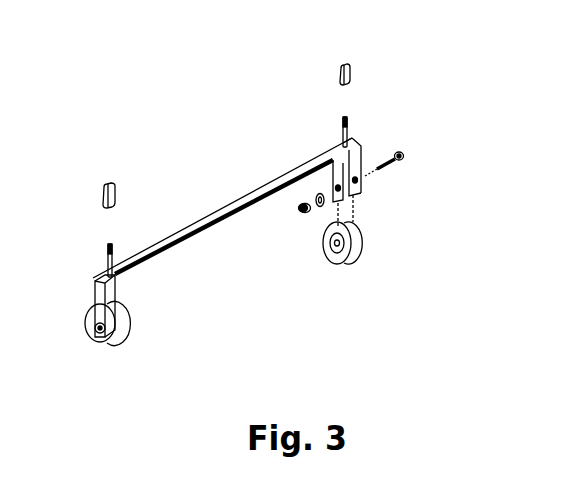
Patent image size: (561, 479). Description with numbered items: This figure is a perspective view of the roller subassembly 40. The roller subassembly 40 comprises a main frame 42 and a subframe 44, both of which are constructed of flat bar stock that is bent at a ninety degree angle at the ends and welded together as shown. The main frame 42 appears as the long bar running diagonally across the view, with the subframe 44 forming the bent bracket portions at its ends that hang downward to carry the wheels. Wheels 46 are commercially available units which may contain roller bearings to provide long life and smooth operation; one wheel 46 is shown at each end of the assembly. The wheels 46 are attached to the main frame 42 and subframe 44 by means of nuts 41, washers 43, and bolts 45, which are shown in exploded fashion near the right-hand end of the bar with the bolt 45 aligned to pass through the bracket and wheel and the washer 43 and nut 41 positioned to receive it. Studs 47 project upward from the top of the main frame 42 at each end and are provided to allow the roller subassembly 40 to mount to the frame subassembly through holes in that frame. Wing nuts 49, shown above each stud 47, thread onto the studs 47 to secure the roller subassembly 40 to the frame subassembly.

The roller subassembly 40 is at (387, 117).
The nuts 41 is at (298, 209).
The main frame 42 is at (262, 188).
The washers 43 is at (318, 207).
The subframe 44 is at (118, 288).
The bolts 45 is at (402, 158).
The wheels 46 is at (103, 345).
The studs 47 is at (114, 255).
The wing nuts 49 is at (106, 185).